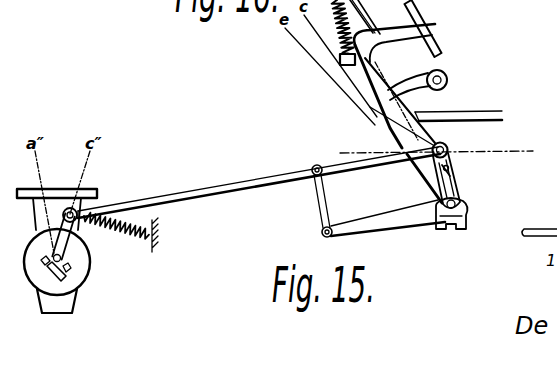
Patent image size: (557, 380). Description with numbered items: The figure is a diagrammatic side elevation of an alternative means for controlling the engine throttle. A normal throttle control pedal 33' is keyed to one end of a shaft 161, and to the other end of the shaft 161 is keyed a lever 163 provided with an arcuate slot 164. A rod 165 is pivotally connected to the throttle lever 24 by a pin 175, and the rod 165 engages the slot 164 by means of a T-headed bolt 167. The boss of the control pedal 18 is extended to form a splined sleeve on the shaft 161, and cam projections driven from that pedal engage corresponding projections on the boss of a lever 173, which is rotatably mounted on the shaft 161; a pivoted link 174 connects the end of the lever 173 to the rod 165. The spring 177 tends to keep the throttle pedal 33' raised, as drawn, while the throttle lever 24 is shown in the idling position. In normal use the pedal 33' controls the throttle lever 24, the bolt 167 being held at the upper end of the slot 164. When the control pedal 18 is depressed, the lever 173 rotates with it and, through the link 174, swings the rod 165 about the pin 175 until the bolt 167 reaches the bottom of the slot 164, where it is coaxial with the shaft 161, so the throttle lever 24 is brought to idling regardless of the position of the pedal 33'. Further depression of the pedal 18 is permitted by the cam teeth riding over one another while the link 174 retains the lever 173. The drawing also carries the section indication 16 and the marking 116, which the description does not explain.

The throttle lever 24 is at (55, 242).
The pin 175 is at (80, 208).
The spring 177 is at (124, 241).
The rod 165 is at (235, 185).
The pivoted link 174 is at (321, 209).
The lever 173 is at (376, 215).
The section line 16 is at (340, 155).
The T-headed bolt 167 is at (448, 147).
The arcuate slot 164 is at (454, 171).
The lever 163 is at (461, 182).
The shaft 161 is at (464, 210).
The post 116 is at (361, 20).
The control pedal 18 is at (434, 42).
The throttle control pedal 33' is at (426, 77).